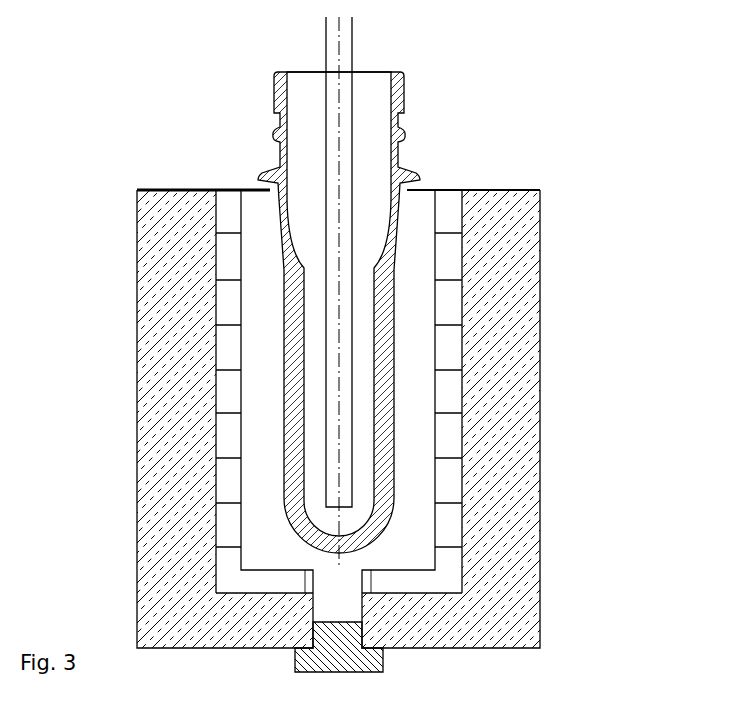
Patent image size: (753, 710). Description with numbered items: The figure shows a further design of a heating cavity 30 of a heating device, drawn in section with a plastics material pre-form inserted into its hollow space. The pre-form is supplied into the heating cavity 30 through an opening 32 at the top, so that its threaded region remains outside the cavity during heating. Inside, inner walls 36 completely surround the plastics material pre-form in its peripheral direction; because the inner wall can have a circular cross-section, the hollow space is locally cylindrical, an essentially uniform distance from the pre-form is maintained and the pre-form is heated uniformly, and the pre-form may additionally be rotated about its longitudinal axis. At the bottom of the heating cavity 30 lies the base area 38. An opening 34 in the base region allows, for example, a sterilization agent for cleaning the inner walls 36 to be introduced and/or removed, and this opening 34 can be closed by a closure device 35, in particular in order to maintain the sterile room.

The heating cavity 30 is at (566, 302).
The opening in the heating cavity 32 is at (408, 188).
The opening 34 is at (343, 604).
The closure device 35 is at (385, 662).
The inner walls 36 is at (435, 397).
The base area of the heating cavity 38 is at (272, 566).